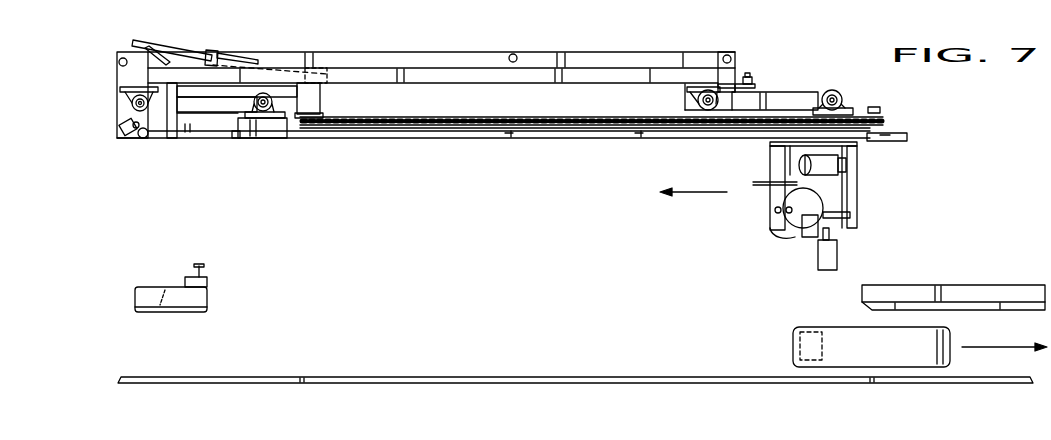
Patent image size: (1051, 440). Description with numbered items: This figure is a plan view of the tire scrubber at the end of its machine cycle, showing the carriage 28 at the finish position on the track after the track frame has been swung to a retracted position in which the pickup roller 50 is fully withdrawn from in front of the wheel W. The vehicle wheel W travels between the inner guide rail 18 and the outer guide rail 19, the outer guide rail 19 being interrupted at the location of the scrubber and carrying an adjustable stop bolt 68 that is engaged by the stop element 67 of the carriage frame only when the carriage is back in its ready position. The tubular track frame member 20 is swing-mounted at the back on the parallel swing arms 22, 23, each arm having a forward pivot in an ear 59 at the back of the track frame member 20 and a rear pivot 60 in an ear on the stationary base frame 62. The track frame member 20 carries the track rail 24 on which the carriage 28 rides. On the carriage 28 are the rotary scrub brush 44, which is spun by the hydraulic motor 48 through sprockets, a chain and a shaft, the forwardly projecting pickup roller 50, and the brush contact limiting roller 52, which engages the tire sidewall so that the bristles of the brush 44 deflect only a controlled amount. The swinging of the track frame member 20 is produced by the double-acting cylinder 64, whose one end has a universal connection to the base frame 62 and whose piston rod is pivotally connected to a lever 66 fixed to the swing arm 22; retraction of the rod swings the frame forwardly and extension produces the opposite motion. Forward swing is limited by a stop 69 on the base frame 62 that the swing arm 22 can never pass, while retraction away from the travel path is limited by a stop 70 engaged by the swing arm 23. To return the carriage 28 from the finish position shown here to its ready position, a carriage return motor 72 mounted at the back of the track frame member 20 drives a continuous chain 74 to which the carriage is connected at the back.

The inner guide rail 18 is at (270, 377).
The outer guide rail 19 is at (165, 310).
The track frame member 20 is at (614, 117).
The swing arm 22 is at (202, 103).
The swing arm 23 is at (794, 97).
The track rail 24 is at (447, 138).
The carriage 28 is at (880, 181).
The rotary scrub brush 44 is at (787, 226).
The hydraulic motor 48 is at (838, 166).
The pickup roller 50 is at (840, 255).
The brush contact limiting roller 52 is at (805, 238).
The ear 59 is at (263, 112).
The rear pivot 60 is at (130, 101).
The base frame 62 is at (539, 89).
The cylinder 64 is at (227, 60).
The lever 66 is at (158, 51).
The stop element 67 is at (768, 182).
The stop bolt 68 is at (206, 266).
The stop 69 is at (153, 138).
The stop 70 is at (757, 88).
The carriage return motor 72 is at (321, 101).
The continuous chain 74 is at (484, 107).
The wheel W is at (828, 335).